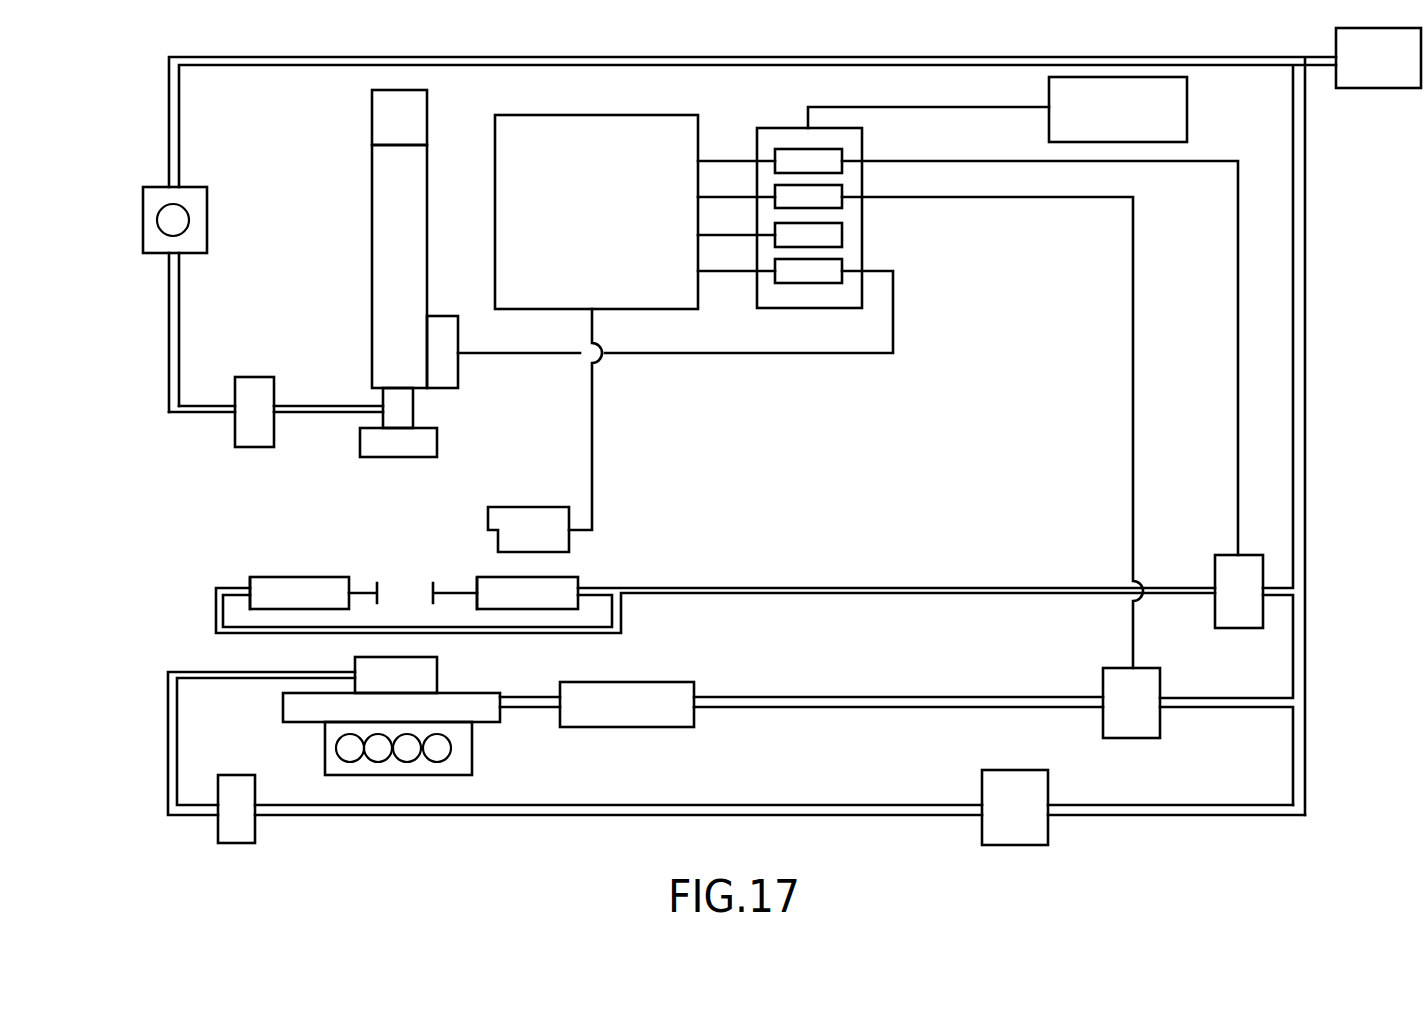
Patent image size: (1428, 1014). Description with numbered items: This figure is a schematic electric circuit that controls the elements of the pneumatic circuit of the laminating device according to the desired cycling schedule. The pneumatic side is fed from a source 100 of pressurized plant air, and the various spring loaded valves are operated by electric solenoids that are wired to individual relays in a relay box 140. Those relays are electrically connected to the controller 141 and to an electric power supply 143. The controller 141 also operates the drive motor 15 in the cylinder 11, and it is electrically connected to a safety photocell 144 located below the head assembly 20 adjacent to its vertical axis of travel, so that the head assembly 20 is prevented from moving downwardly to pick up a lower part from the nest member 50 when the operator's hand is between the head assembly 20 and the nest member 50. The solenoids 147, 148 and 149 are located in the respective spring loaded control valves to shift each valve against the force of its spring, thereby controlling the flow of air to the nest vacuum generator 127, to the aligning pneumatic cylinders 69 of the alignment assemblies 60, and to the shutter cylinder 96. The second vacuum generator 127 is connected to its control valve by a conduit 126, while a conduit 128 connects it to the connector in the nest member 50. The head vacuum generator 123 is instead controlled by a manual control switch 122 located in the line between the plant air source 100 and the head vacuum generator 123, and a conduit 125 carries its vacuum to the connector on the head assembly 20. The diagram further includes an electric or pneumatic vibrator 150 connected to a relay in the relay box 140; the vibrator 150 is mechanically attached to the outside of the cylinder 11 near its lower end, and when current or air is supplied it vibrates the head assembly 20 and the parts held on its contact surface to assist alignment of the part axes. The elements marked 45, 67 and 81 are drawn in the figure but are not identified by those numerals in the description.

The source of pressurized plant air 100 is at (1359, 75).
The cylinder 11 is at (372, 243).
The drive motor 15 is at (372, 116).
The head assembly 20 is at (437, 443).
The roller assembly 45 is at (445, 750).
The nest member 50 is at (437, 678).
The alignment assemblies 60 is at (295, 577).
The spark gap 67 is at (377, 590).
The pneumatic cylinders 69 is at (263, 583).
The platen 81 is at (492, 722).
The shutter cylinder 96 is at (673, 682).
The manual control switch 122 is at (207, 203).
The vacuum generator 123 is at (253, 377).
The conduit 125 is at (311, 406).
The conduit 126 is at (718, 805).
The second vacuum generator 127 is at (238, 778).
The conduit 128 is at (177, 732).
The relay box 140 is at (862, 145).
The controller 141 is at (660, 114).
The electric power supply 143 is at (1187, 113).
The safety photocell 144 is at (492, 507).
The solenoid 147 is at (990, 772).
The solenoid 148 is at (1103, 680).
The solenoid 149 is at (1222, 555).
The vibrator 150 is at (458, 340).